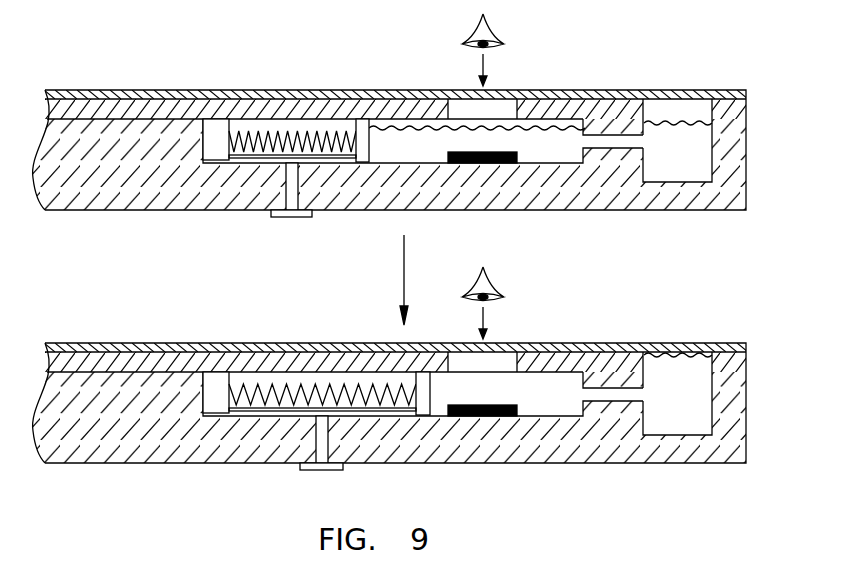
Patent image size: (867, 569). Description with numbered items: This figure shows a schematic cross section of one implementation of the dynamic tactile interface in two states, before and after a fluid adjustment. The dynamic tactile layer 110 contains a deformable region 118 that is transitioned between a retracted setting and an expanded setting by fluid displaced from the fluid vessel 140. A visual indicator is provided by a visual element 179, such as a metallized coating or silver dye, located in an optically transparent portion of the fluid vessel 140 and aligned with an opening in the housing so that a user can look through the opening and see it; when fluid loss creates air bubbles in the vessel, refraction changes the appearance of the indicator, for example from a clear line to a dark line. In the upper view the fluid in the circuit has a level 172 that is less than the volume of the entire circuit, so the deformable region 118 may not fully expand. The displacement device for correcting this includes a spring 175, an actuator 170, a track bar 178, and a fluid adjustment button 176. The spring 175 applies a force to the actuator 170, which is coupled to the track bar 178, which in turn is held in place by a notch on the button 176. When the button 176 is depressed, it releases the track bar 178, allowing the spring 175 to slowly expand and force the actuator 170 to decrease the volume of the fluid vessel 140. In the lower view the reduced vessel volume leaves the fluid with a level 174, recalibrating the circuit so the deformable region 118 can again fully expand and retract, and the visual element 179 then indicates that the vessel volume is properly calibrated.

The dynamic tactile layer 110 is at (223, 95).
The deformable region 118 is at (670, 96).
The fluid vessel 140 is at (548, 147).
The actuator 170 is at (362, 122).
The fluid level 172 is at (688, 122).
The fluid level 174 is at (700, 356).
The spring 175 is at (277, 134).
The fluid adjustment button 176 is at (290, 218).
The track bar 178 is at (257, 160).
The visual element 179 is at (495, 165).